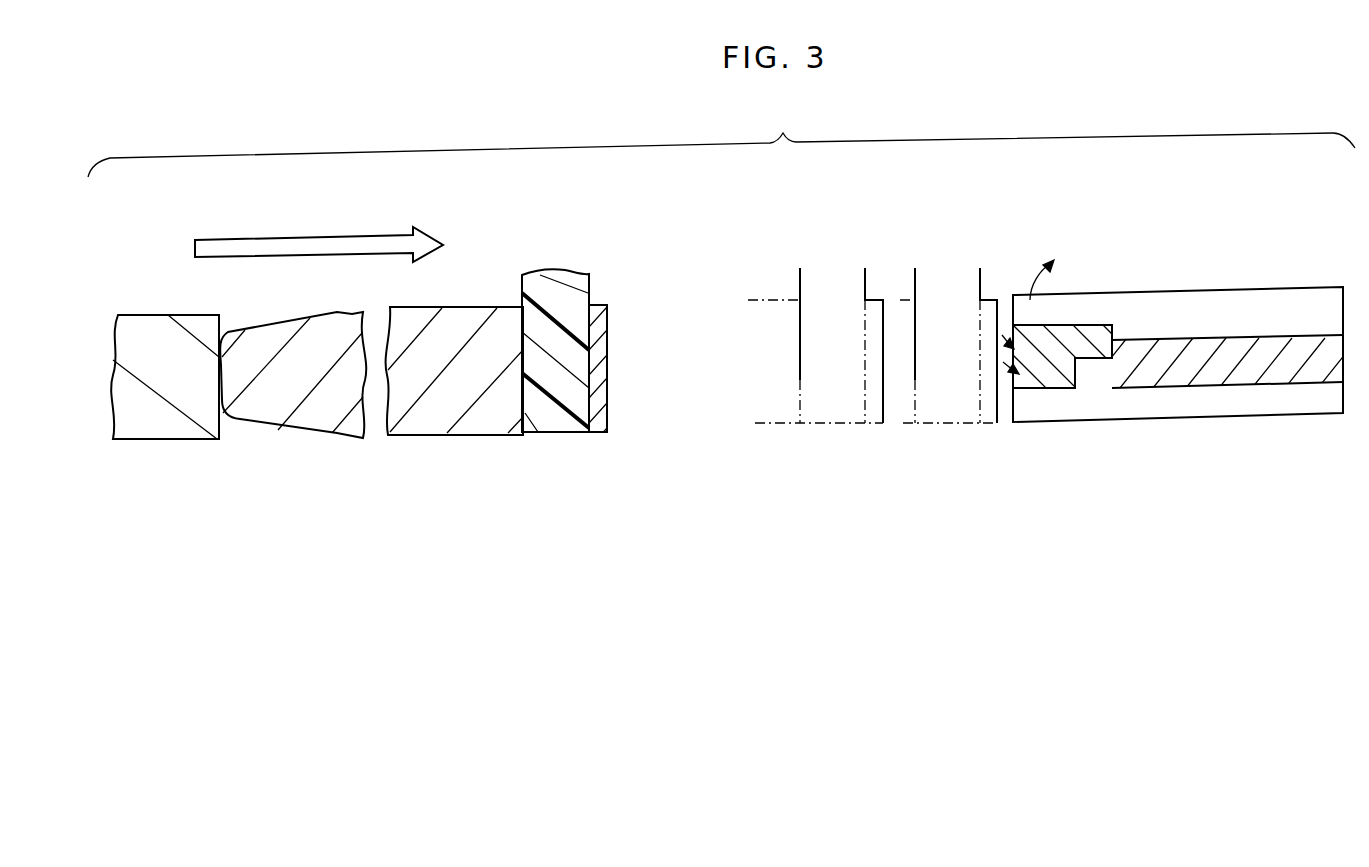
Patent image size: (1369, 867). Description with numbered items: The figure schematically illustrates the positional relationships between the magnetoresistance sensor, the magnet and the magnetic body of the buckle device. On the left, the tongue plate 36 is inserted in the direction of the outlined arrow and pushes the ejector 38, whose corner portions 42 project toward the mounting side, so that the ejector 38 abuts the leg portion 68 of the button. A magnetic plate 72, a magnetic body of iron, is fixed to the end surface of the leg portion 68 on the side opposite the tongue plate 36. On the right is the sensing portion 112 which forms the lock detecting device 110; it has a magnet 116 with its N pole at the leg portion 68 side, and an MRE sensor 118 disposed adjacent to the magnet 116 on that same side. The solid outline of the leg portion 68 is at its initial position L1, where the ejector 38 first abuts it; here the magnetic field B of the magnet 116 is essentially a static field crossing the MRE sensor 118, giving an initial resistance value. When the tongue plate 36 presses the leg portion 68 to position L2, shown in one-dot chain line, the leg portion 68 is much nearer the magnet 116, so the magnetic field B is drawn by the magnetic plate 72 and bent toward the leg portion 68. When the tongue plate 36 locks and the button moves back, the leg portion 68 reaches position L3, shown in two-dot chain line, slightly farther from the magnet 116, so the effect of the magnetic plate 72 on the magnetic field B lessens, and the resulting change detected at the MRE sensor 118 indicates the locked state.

The tongue plate 36 is at (177, 427).
The corner portions 42 is at (478, 427).
The ejector 38 is at (691, 375).
The leg portion 68 is at (582, 288).
The magnetic plate 72 is at (600, 367).
The sensing portion 112 is at (1154, 437).
The lock detecting device 110 is at (1178, 379).
The magnet 116 is at (1238, 335).
The MRE sensor 118 is at (1088, 325).
The magnetic field B is at (1100, 357).
The initial position of the leg portion L1 is at (1035, 490).
The position of the leg portion L2 is at (997, 425).
The locked position of the leg portion L3 is at (883, 425).